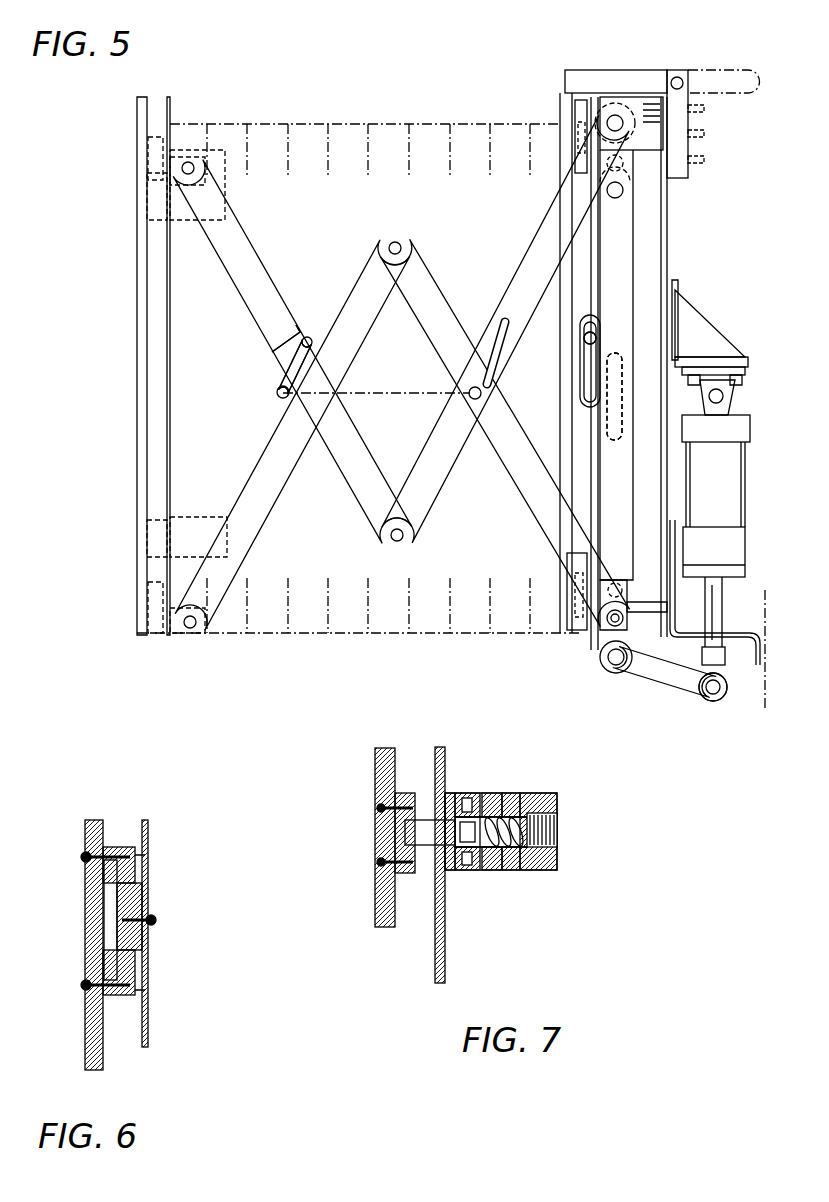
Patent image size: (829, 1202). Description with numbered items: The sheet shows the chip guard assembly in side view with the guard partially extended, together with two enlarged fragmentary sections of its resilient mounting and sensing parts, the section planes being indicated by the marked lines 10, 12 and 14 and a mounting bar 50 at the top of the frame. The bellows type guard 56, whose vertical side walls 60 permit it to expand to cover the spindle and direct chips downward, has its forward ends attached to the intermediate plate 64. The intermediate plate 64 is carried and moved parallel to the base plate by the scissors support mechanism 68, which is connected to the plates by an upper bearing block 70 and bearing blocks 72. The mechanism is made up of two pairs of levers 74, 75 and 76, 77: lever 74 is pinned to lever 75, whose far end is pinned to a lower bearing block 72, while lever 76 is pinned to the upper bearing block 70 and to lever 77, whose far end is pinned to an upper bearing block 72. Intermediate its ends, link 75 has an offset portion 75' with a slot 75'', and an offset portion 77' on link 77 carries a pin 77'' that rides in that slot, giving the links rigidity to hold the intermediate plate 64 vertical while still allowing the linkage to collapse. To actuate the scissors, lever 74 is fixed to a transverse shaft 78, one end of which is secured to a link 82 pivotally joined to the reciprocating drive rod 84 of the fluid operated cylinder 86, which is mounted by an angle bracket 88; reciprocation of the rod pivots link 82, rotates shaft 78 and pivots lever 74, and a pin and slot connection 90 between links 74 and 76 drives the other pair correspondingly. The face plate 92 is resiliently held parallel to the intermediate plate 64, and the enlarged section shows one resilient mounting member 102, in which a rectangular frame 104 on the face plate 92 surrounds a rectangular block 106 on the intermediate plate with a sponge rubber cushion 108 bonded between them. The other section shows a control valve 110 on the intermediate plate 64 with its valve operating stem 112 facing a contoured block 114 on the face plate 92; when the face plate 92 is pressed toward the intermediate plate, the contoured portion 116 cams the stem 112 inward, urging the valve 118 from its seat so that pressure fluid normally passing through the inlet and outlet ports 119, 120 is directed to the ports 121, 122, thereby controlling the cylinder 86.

In FIG. 5, the section line 10- 10 is at (552, 690).
In FIG. 5, the section line 12- 12 is at (585, 735).
In FIG. 5, the section line 14- 14 is at (700, 710).
In FIG. 5, the mounting bracket bar 50 is at (682, 78).
In FIG. 5, the bellows type guard 56 is at (412, 113).
In FIG. 5, the vertical side walls 60 is at (385, 638).
In FIG. 5, the intermediate plate 64 is at (556, 270).
In FIG. 6, the intermediate plate 64 is at (149, 1016).
In FIG. 7, the intermediate plate 64 is at (437, 968).
In FIG. 5, the scissors support mechanism 68 is at (372, 494).
In FIG. 5, the upper bearing block 70 is at (660, 130).
In FIG. 5, the bearing block 72 is at (182, 172).
In FIG. 5, the lever 74 is at (522, 513).
In FIG. 5, the lever 75 is at (470, 365).
In FIG. 5, the offset portion 75' is at (465, 389).
In FIG. 5, the slot 75'' is at (441, 340).
In FIG. 5, the lever 76 is at (528, 252).
In FIG. 5, the lever 77 is at (292, 352).
In FIG. 5, the offset portion 77' is at (255, 343).
In FIG. 5, the pin 77'' is at (472, 328).
In FIG. 5, the transverse shaft 78 is at (600, 658).
In FIG. 5, the link 82 is at (702, 700).
In FIG. 5, the reciprocating drive rod 84 is at (716, 612).
In FIG. 5, the fluid operated cylinder 86 is at (742, 452).
In FIG. 5, the angle bracket 88 is at (700, 322).
In FIG. 5, the pin and slot connection 90 is at (468, 393).
In FIG. 5, the face plate 92 is at (138, 300).
In FIG. 6, the face plate 92 is at (92, 955).
In FIG. 7, the face plate 92 is at (378, 892).
In FIG. 5, the resilient mounting member 102 is at (150, 135).
In FIG. 6, the resilient mounting member 102 is at (108, 803).
In FIG. 6, the rectangular frame 104 is at (112, 845).
In FIG. 6, the rectangular block 106 is at (140, 905).
In FIG. 6, the cushion 108 is at (104, 876).
In FIG. 5, the control valve 110 is at (186, 215).
In FIG. 7, the control valve 110 is at (555, 793).
In FIG. 7, the valve operating stem 112 is at (425, 870).
In FIG. 7, the contoured block 114 is at (405, 795).
In FIG. 7, the contoured portion 116 is at (410, 835).
In FIG. 7, the valve 118 is at (492, 872).
In FIG. 7, the inlet port 119 is at (468, 795).
In FIG. 7, the outlet port 120 is at (468, 872).
In FIG. 7, the port 121 is at (512, 795).
In FIG. 7, the port 122 is at (512, 872).